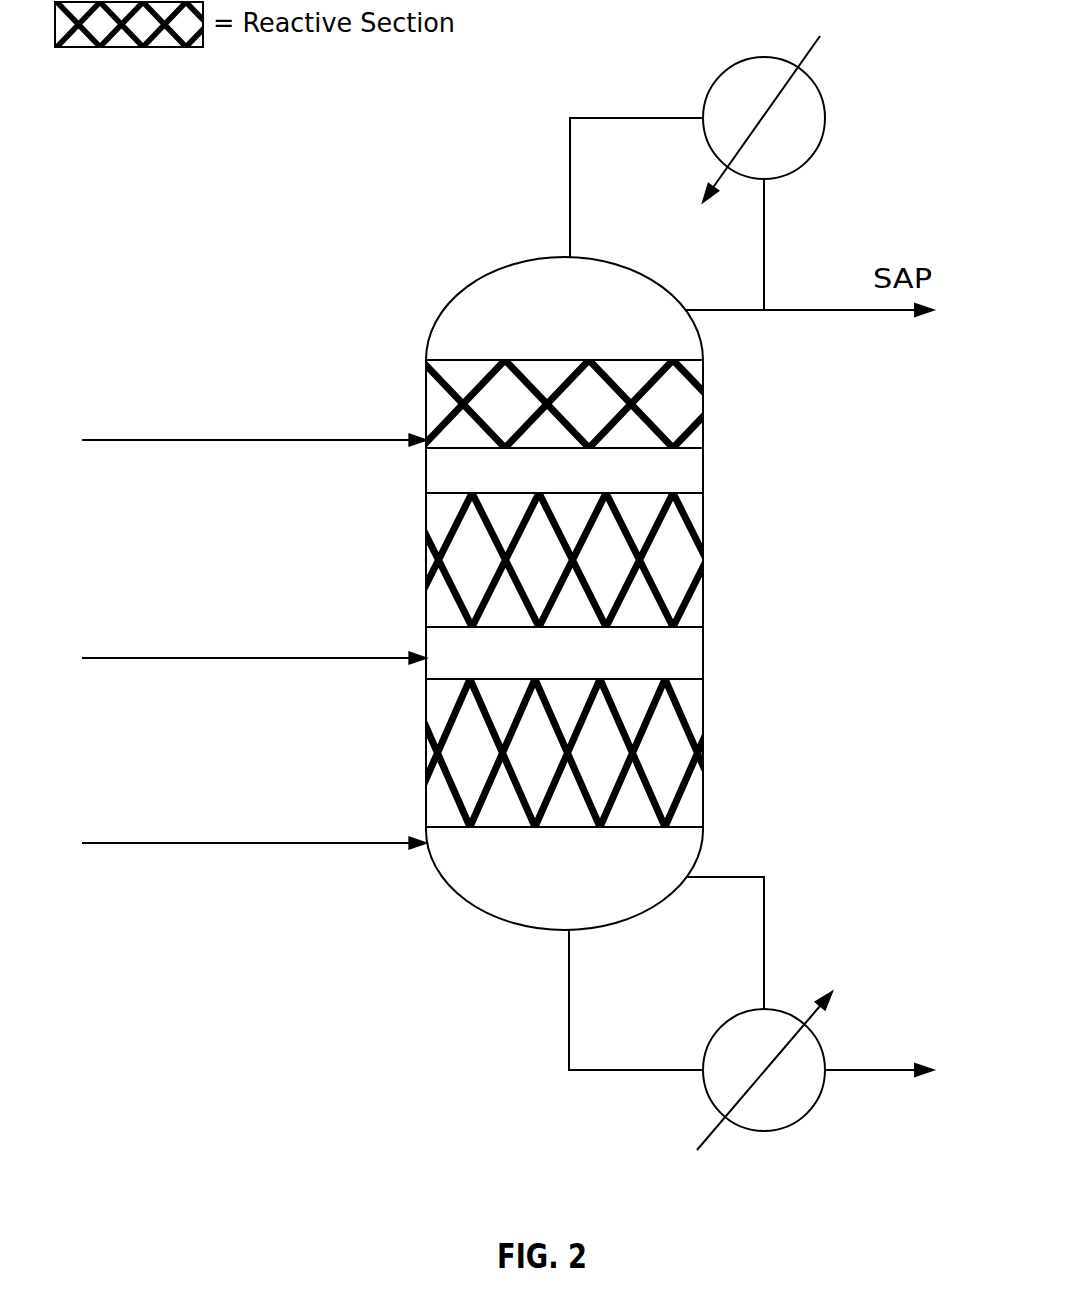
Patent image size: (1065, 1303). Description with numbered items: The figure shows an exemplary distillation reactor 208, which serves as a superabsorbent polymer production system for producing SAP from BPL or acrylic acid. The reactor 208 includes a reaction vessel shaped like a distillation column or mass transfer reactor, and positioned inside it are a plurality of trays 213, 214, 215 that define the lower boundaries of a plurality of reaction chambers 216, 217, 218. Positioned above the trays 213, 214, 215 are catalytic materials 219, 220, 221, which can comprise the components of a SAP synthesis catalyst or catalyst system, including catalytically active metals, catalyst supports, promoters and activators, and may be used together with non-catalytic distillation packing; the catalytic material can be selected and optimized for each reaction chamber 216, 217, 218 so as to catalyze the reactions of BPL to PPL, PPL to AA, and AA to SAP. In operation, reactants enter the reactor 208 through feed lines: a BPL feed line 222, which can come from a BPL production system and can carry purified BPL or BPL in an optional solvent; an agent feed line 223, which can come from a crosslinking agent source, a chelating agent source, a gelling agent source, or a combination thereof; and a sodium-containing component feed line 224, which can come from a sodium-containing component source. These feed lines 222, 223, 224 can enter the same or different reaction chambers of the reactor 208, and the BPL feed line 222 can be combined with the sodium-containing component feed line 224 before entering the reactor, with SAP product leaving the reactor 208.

The distillation reactor 208 is at (458, 292).
The tray 213 is at (680, 447).
The tray 214 is at (680, 627).
The tray 215 is at (680, 826).
The reaction chamber 216 is at (589, 670).
The reaction chamber 217 is at (589, 483).
The reaction chamber 218 is at (589, 327).
The catalytic material 219 is at (703, 763).
The catalytic material 220 is at (703, 571).
The catalytic material 221 is at (703, 384).
The BPL feed line 222 is at (213, 844).
The agent feed line 223 is at (383, 659).
The sodium-containing component feed line 224 is at (325, 441).